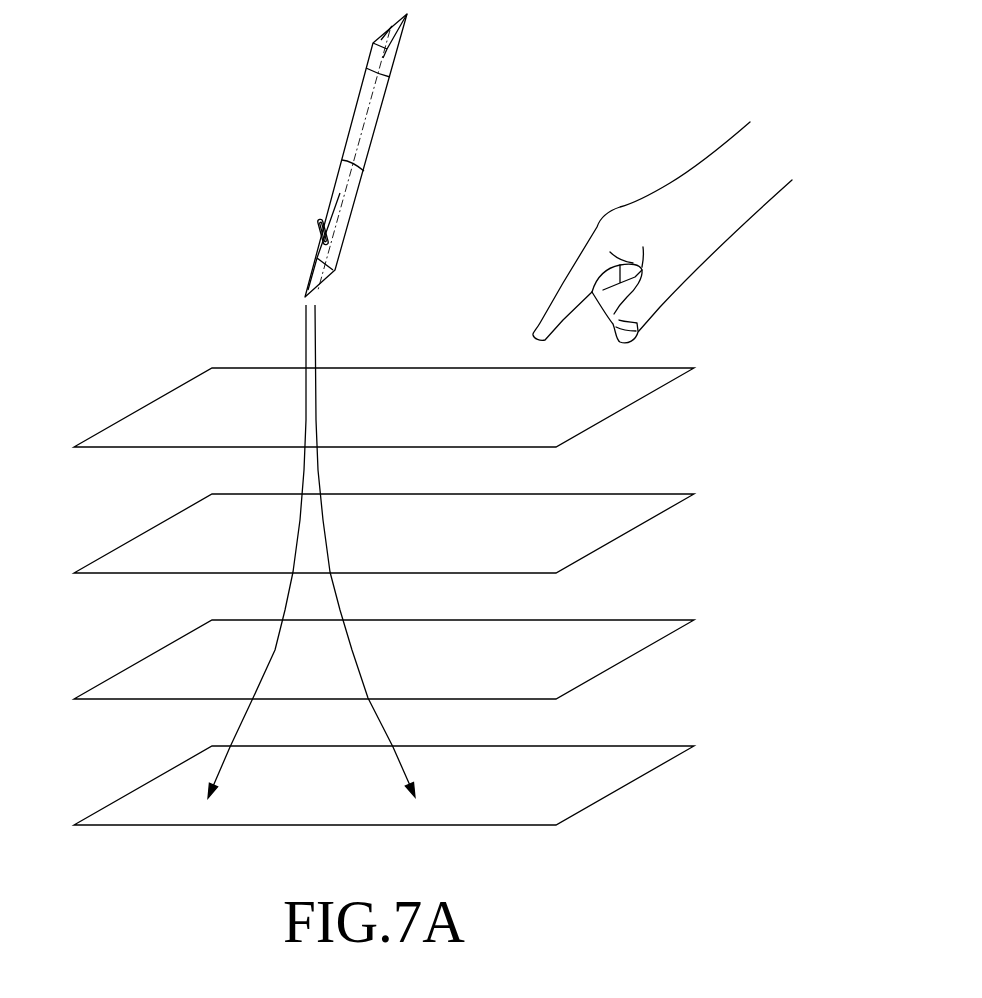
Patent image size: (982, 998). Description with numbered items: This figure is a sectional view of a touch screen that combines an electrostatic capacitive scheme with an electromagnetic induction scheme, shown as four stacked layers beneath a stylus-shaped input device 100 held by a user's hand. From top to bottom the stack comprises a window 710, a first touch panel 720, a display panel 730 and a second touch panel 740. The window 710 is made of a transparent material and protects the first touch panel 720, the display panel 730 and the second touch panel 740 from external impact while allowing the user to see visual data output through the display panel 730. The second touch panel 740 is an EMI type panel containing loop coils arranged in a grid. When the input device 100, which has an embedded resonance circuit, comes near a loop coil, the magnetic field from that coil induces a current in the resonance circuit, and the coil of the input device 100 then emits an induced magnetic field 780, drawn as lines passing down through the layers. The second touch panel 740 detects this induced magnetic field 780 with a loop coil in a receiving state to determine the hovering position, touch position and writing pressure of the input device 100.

The input device 100 is at (378, 122).
The induced magnetic field 780 is at (317, 330).
The window 710 is at (694, 368).
The first touch panel 720 is at (694, 494).
The display panel 730 is at (694, 620).
The second touch panel 740 is at (694, 746).